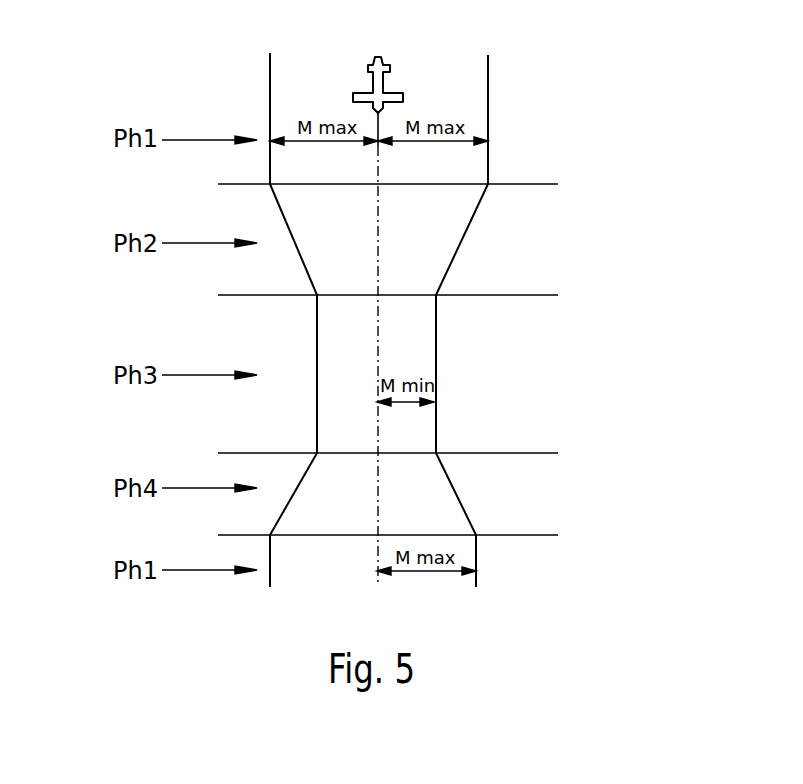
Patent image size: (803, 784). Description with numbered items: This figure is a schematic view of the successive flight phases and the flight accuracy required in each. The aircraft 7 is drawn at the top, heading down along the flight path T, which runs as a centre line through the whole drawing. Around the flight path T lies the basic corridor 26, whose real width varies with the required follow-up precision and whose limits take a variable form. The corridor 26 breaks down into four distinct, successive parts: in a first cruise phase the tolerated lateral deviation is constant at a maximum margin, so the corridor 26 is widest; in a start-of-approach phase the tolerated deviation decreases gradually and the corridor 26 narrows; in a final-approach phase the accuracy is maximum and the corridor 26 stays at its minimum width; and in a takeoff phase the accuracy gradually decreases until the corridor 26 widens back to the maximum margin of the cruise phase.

The basic corridor 26 is at (270, 93).
The aircraft 7 is at (386, 83).
The flight path T is at (378, 265).